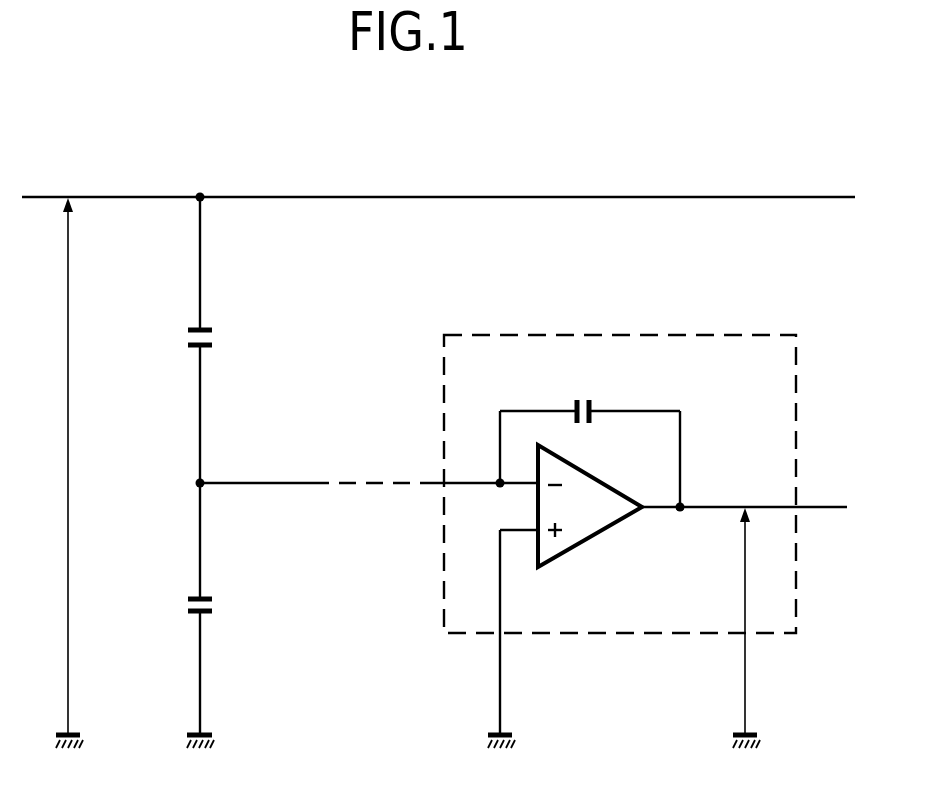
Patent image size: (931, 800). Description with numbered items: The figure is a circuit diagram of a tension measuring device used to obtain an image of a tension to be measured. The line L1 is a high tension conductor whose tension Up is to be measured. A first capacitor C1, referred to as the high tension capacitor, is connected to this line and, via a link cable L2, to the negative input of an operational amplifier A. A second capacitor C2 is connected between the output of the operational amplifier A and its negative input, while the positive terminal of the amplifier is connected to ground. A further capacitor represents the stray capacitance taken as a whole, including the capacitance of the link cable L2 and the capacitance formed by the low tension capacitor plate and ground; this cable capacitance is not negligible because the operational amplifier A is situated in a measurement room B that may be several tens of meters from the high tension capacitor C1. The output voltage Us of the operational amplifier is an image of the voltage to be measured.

The line L1 is at (124, 197).
The link cable L2 is at (259, 483).
The first capacitor C1 is at (197, 330).
The second capacitor C2 is at (592, 403).
The measurement room B is at (472, 335).
The operational amplifier A is at (595, 491).
The tension Up is at (53, 466).
The output voltage Us is at (760, 621).